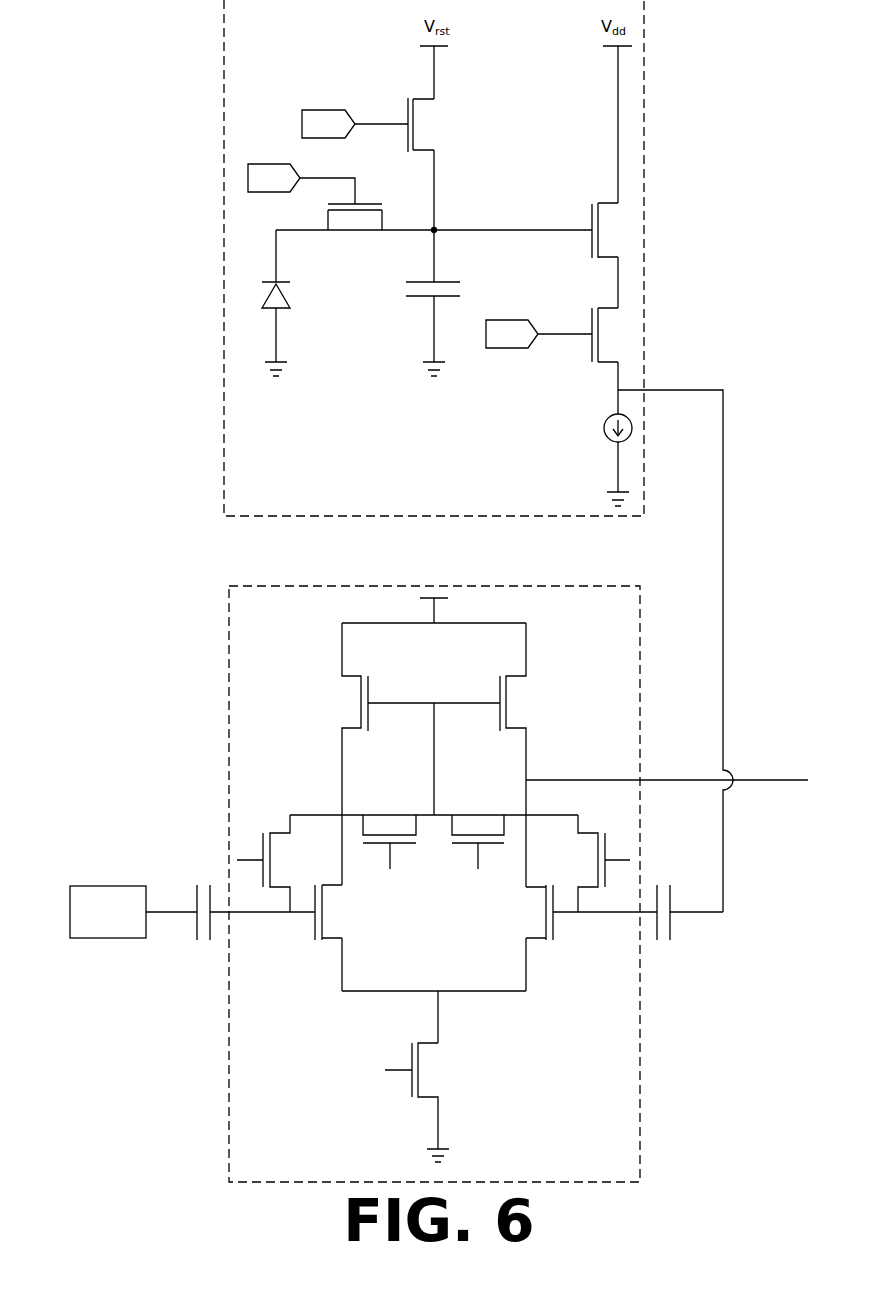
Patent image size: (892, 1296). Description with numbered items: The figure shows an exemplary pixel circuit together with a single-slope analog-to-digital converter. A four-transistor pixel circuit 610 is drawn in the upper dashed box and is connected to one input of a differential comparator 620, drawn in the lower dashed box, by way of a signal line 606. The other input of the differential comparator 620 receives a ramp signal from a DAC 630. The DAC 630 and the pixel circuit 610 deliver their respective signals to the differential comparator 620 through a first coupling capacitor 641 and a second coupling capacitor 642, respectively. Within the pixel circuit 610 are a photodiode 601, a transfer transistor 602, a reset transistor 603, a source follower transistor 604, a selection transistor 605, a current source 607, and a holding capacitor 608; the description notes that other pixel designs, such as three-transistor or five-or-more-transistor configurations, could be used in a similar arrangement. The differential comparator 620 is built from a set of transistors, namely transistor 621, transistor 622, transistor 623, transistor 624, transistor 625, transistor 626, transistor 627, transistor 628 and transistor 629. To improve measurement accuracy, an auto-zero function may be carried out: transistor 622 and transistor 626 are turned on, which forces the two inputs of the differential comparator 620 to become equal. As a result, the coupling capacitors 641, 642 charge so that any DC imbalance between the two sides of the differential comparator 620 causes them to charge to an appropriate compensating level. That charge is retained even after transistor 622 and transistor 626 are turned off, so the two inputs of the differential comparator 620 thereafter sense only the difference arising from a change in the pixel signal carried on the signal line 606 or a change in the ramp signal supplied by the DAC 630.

The pixel circuit 610 is at (268, 17).
The photodiode 601 is at (268, 296).
The transfer transistor 602 is at (328, 216).
The reset transistor 603 is at (408, 103).
The source follower transistor 604 is at (606, 256).
The selection transistor 605 is at (606, 362).
The signal line 606 is at (723, 540).
The current source 607 is at (632, 425).
The holding capacitor 608 is at (452, 298).
The differential comparator 620 is at (636, 610).
The transistor 621 is at (361, 703).
The transistor 622 is at (278, 833).
The transistor 623 is at (324, 910).
The transistor 624 is at (388, 833).
The transistor 625 is at (506, 703).
The transistor 626 is at (592, 833).
The transistor 627 is at (546, 908).
The transistor 628 is at (476, 833).
The transistor 629 is at (412, 1045).
The DAC 630 is at (105, 886).
The first coupling capacitor 641 is at (197, 925).
The second coupling capacitor 642 is at (670, 930).